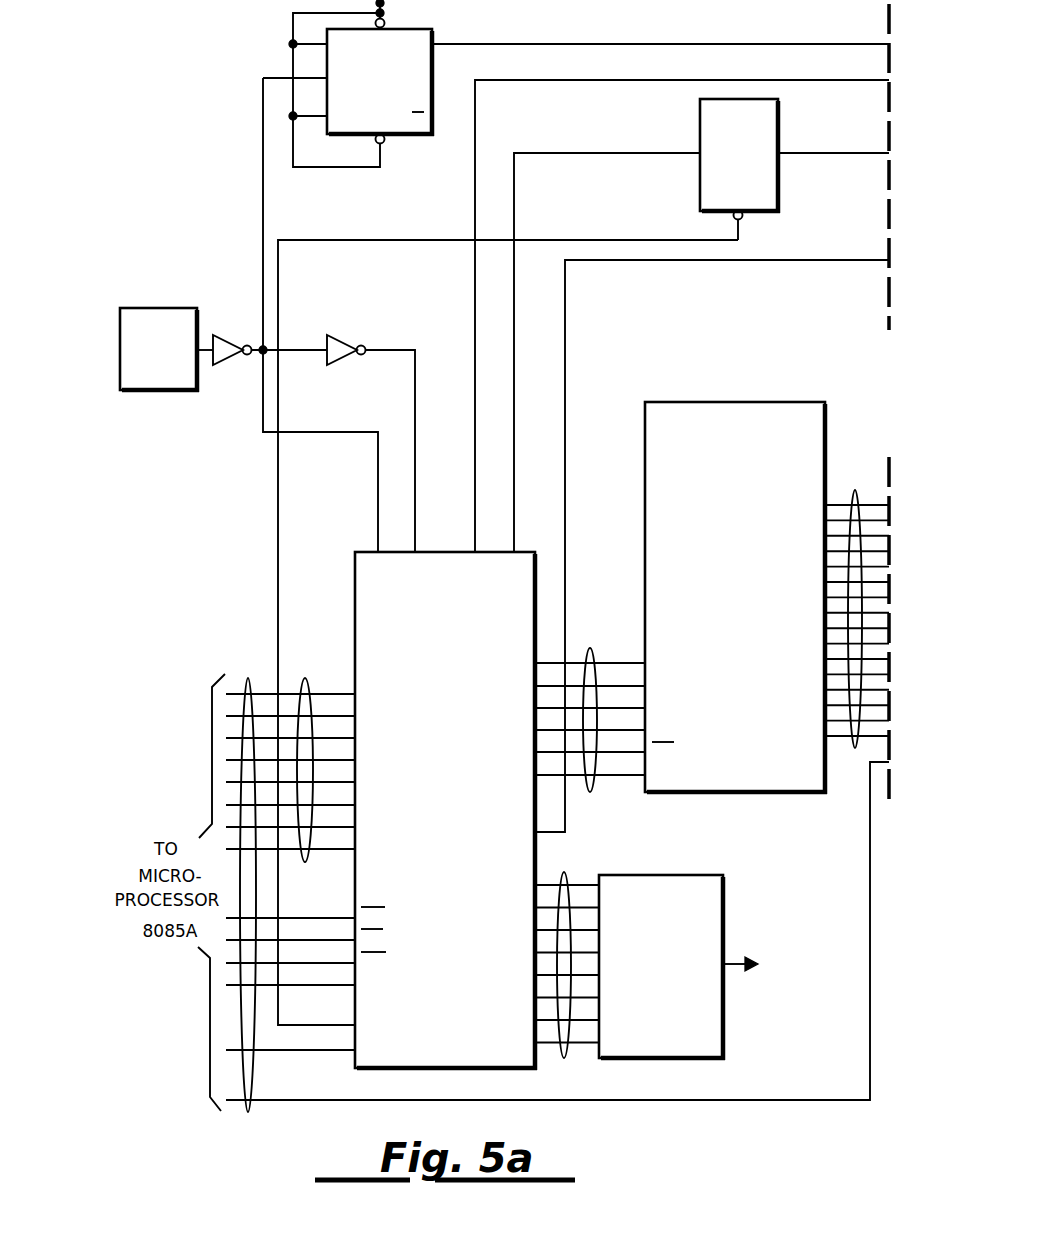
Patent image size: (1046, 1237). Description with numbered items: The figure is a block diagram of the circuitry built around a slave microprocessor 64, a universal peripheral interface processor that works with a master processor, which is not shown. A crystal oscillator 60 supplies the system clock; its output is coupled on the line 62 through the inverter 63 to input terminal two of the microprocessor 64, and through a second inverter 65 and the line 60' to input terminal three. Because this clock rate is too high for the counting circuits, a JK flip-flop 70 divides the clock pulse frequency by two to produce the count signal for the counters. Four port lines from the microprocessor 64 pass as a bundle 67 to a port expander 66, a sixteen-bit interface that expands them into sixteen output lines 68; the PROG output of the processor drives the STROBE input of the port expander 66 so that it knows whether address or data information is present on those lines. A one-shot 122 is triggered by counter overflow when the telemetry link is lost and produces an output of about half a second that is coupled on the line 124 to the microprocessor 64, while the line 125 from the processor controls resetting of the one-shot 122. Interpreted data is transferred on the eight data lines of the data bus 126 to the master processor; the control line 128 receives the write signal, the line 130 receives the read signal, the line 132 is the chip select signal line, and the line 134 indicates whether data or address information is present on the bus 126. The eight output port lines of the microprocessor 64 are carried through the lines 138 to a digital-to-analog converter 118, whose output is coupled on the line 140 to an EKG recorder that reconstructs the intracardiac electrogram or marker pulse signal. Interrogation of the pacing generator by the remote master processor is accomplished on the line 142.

The crystal oscillator 60 is at (166, 323).
The line 60' is at (413, 451).
The line 62 is at (307, 432).
The inverter 63 is at (226, 338).
The microprocessor 64 is at (450, 552).
The second inverter 65 is at (341, 338).
The port expander 66 is at (737, 402).
The bus between microprocessor and port expander 67 is at (592, 650).
The output lines 68 is at (856, 490).
The JK flip-flop 70 is at (410, 138).
The digital-to-analog converter 118 is at (678, 875).
The one-shot 122 is at (778, 190).
The line 124 is at (640, 153).
The line 125 is at (278, 543).
The data bus 126 is at (305, 678).
The control line 128 is at (333, 917).
The line 130 is at (333, 939).
The chip select signal line 132 is at (333, 962).
The line 134 is at (333, 984).
The lines 138 is at (565, 874).
The line 140 is at (738, 962).
The line 142 is at (770, 1103).